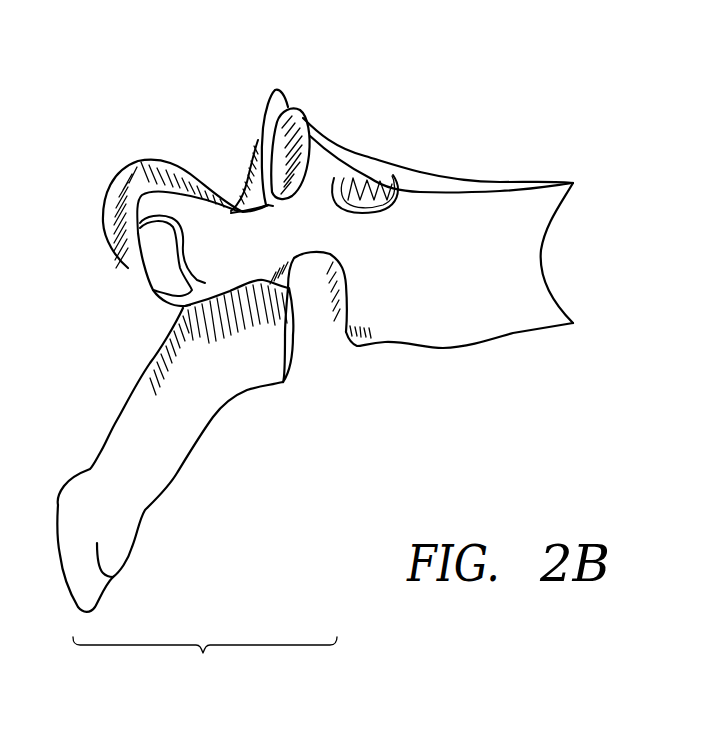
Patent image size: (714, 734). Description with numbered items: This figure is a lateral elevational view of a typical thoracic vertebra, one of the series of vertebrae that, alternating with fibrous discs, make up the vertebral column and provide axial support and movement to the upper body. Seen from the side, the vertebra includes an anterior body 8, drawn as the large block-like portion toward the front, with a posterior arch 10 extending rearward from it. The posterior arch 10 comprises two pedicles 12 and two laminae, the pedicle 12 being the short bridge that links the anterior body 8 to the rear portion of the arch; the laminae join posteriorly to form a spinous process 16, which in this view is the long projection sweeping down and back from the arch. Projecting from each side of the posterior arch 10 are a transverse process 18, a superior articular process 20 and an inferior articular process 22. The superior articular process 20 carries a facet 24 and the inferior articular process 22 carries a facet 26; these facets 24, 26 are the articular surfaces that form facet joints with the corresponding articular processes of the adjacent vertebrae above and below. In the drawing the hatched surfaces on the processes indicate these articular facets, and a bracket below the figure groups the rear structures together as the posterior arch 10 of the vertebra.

The anterior body 8 is at (493, 240).
The posterior arch 10 is at (205, 660).
The pedicle 12 is at (330, 168).
The spinous process 16 is at (177, 450).
The transverse process 18 is at (143, 175).
The superior articular process 20 is at (277, 110).
The inferior articular process 22 is at (281, 380).
The facet 24 is at (289, 131).
The facet 26 is at (290, 330).